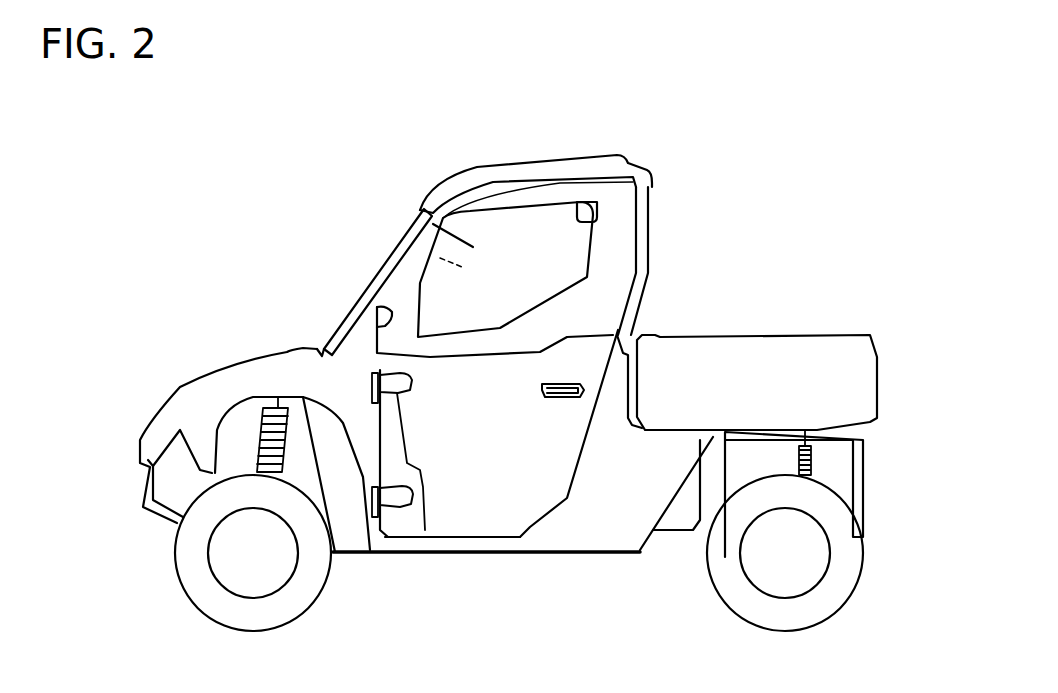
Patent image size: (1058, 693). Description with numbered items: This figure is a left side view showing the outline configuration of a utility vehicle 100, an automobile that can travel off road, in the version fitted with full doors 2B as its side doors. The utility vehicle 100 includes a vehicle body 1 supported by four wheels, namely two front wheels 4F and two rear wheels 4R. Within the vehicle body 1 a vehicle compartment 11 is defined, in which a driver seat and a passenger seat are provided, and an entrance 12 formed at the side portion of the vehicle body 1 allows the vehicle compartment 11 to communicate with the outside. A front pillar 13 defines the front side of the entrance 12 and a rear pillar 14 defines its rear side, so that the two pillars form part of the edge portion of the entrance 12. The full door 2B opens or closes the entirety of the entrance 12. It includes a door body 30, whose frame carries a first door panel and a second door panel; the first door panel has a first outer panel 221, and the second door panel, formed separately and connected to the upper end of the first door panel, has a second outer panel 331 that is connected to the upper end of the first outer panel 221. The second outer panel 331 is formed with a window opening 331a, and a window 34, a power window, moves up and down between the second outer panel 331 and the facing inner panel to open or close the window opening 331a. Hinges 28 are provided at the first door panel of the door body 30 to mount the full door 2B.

The utility vehicle 100 is at (402, 152).
The vehicle body 1 is at (549, 157).
The rear pillar 14 is at (640, 248).
The second outer panel 331 is at (613, 273).
The window opening 331a is at (600, 218).
The first outer panel 221 is at (592, 352).
The entrance 12 is at (377, 303).
The front pillar 13 is at (387, 277).
The window 34 is at (422, 220).
The vehicle compartment 11 is at (420, 248).
The full door 2B is at (543, 518).
The hinges 28 is at (400, 392).
The door body 30 is at (493, 538).
The front wheels 4F is at (176, 566).
The rear wheels 4R is at (860, 577).